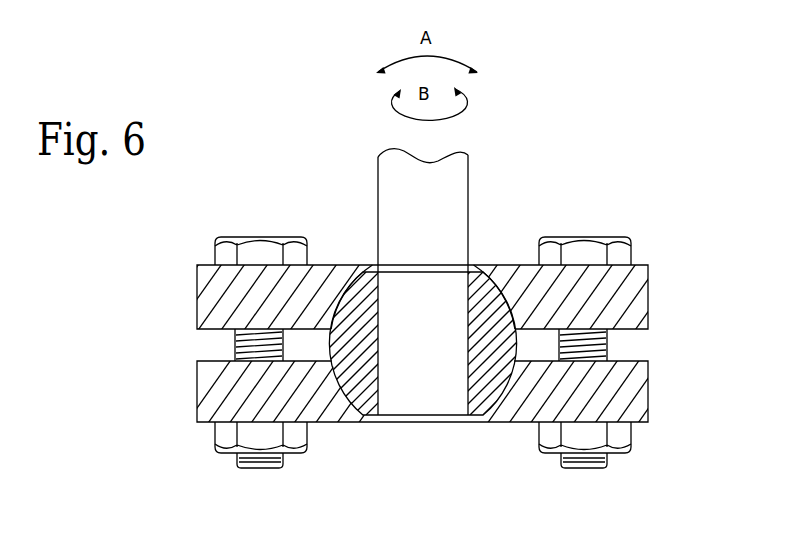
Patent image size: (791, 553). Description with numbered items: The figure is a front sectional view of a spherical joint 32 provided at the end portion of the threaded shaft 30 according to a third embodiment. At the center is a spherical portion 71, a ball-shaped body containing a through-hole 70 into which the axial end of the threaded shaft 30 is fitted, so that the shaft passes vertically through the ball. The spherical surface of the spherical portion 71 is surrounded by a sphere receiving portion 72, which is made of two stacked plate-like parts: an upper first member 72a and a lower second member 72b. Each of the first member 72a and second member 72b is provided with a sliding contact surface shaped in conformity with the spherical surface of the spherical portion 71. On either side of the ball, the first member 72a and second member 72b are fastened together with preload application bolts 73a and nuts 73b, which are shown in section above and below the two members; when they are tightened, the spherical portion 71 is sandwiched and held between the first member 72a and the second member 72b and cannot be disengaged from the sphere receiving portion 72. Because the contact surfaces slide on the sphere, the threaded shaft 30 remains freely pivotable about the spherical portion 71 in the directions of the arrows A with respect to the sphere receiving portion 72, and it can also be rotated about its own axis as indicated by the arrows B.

The threaded shaft 30 is at (468, 165).
The ball joint assembly 32 is at (600, 198).
The through-hole 70 is at (394, 418).
The spherical portion 71 is at (352, 272).
The sphere receiving portion 72 is at (438, 343).
The first member 72a is at (620, 298).
The second member 72b is at (450, 391).
The preload application bolt 73a is at (258, 250).
The nut 73b is at (227, 445).